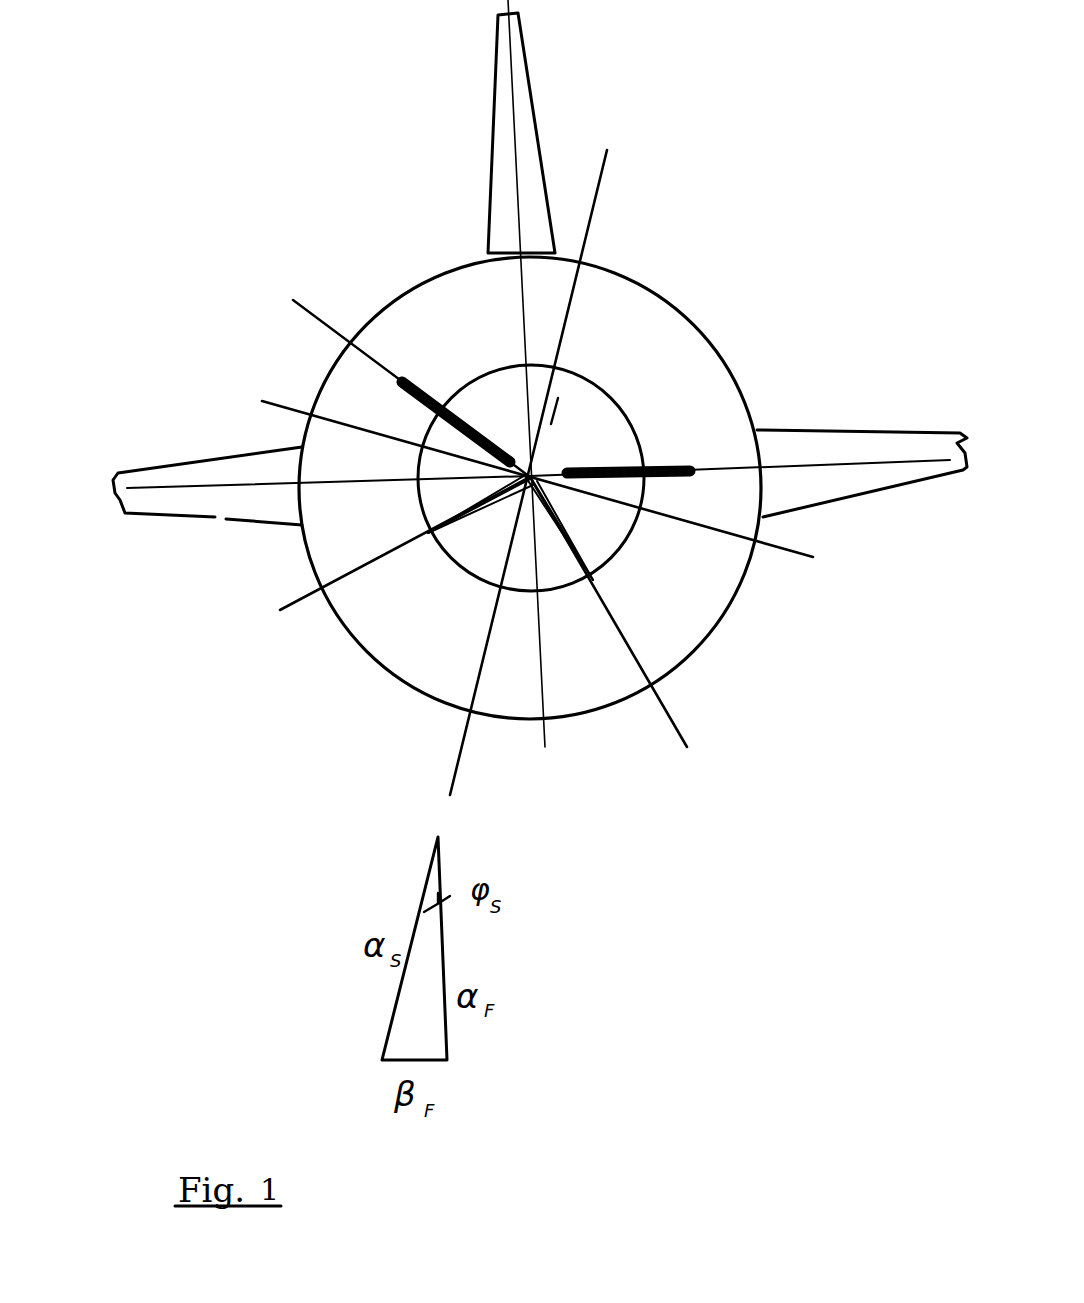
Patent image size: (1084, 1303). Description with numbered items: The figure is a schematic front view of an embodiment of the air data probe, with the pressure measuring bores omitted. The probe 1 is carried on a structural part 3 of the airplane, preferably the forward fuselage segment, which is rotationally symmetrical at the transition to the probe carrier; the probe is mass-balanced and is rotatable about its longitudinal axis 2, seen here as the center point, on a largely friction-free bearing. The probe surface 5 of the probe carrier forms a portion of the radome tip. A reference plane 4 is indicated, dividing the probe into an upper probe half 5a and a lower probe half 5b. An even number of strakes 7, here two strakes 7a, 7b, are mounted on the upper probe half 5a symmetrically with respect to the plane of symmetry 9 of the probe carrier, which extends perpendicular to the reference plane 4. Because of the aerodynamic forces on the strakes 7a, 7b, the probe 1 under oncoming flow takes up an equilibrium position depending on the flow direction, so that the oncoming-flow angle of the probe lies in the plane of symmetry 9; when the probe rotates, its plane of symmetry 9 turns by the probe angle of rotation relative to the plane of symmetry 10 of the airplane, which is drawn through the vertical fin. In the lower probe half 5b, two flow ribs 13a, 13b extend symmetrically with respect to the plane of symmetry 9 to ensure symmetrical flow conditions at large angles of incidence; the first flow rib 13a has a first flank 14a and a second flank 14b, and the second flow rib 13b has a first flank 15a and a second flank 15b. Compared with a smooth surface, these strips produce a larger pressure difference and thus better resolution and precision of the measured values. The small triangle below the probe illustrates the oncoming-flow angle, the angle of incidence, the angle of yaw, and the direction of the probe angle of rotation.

The probe 1 is at (628, 410).
The longitudinal axis 2 is at (530, 478).
The structural part 3 is at (682, 377).
The reference plane 4 is at (553, 491).
The probe surface 5 is at (592, 402).
The upper probe half 5a is at (590, 403).
The lower probe half 5b is at (492, 560).
The strakes 7 is at (393, 393).
The first strake 7a is at (422, 388).
The second strake 7b is at (662, 468).
The plane of symmetry of the probe carrier 9 is at (537, 449).
The plane of symmetry of the airplane 10 is at (510, 70).
The first flow rib 13a is at (385, 561).
The second flow rib 13b is at (640, 616).
The first flank of the first flow rib 14a is at (428, 533).
The second flank of the first flow rib 14b is at (428, 535).
The first flank of the second flow rib 15a is at (593, 583).
The second flank of the second flow rib 15b is at (597, 582).